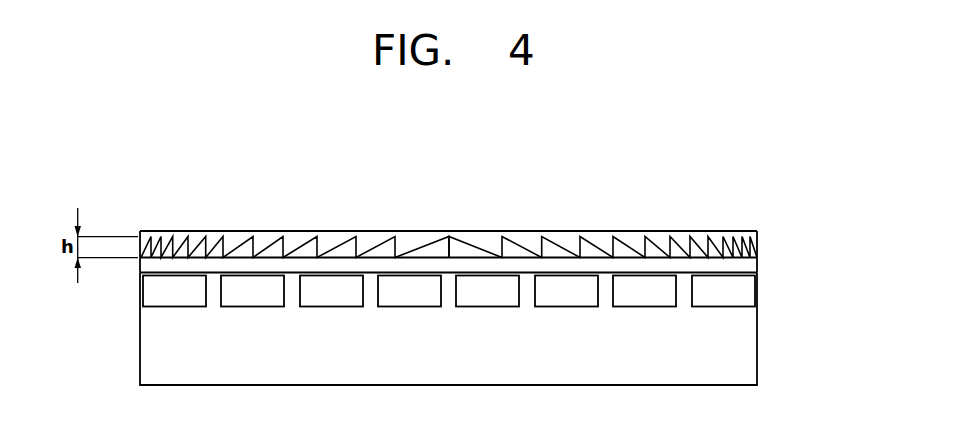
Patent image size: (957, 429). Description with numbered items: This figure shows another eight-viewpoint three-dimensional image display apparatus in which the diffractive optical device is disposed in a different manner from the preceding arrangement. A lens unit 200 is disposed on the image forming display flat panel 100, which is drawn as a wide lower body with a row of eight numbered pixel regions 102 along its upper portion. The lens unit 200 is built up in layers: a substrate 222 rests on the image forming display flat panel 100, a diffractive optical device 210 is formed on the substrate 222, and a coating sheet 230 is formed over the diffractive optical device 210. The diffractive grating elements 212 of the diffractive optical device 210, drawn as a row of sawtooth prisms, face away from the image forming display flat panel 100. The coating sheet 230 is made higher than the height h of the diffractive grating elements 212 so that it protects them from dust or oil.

The lens unit 200 is at (777, 200).
The coating sheet 230 is at (683, 237).
The diffractive optical device 210 is at (448, 210).
The diffractive grating elements 212 is at (550, 247).
The substrate 222 is at (749, 266).
The pixel regions 102 is at (749, 293).
The image forming display flat panel 100 is at (747, 357).